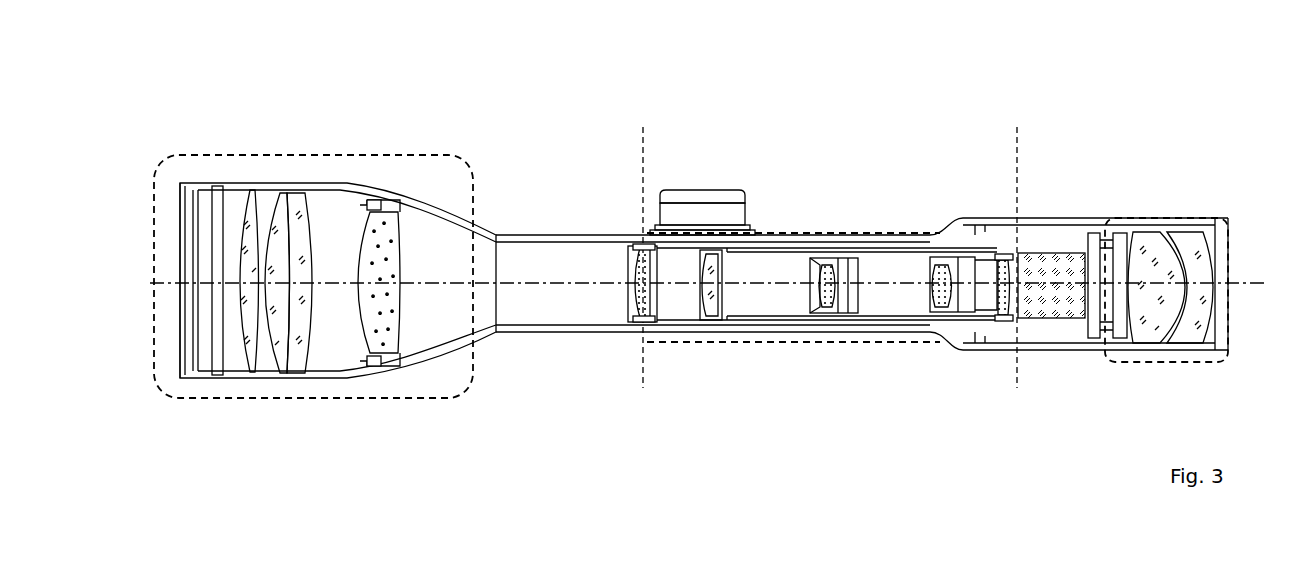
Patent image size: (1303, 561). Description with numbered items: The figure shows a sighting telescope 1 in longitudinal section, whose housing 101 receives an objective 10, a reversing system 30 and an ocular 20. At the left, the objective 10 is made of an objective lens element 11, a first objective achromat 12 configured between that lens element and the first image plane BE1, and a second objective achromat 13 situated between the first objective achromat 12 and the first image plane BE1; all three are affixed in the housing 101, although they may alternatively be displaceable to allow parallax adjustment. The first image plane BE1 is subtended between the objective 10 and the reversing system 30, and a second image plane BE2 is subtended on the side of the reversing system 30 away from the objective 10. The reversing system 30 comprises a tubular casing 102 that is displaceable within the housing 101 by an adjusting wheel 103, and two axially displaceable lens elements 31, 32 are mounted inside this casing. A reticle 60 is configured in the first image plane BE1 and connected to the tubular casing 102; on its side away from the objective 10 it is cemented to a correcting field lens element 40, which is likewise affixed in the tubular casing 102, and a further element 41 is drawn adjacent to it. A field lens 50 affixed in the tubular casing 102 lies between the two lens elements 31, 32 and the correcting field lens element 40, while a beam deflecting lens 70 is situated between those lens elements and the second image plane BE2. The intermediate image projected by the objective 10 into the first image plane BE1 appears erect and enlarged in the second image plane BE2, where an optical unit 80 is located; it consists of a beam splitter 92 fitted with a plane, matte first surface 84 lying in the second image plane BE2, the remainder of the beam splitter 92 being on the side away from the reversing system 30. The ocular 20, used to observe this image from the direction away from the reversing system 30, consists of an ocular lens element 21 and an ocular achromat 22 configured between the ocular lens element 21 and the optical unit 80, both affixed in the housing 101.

The sighting telescope 1 is at (917, 64).
The objective 10 is at (268, 153).
The objective lens element 11 is at (250, 215).
The objective achromat 12 is at (297, 210).
The second objective achromat 13 is at (388, 222).
The housing 101 is at (567, 244).
The tubular casing 102 is at (762, 326).
The adjusting wheel 103 is at (710, 191).
The first image plane BE1 is at (642, 241).
The second image plane BE2 is at (1019, 241).
The reversing system 30 is at (797, 232).
The lens element 31 is at (822, 270).
The lens element 32 is at (937, 270).
The correcting field lens element 40 is at (647, 321).
The field lens 41 is at (635, 244).
The field lens 50 is at (705, 321).
The reticle 60 is at (630, 314).
The beam deflecting lens 70 is at (1002, 312).
The optical unit 80 is at (1057, 348).
The beam splitter 92 is at (1062, 307).
The first surface 84 is at (1010, 268).
The ocular 20 is at (1125, 216).
The ocular lens element 21 is at (1195, 250).
The ocular achromat 22 is at (1157, 332).